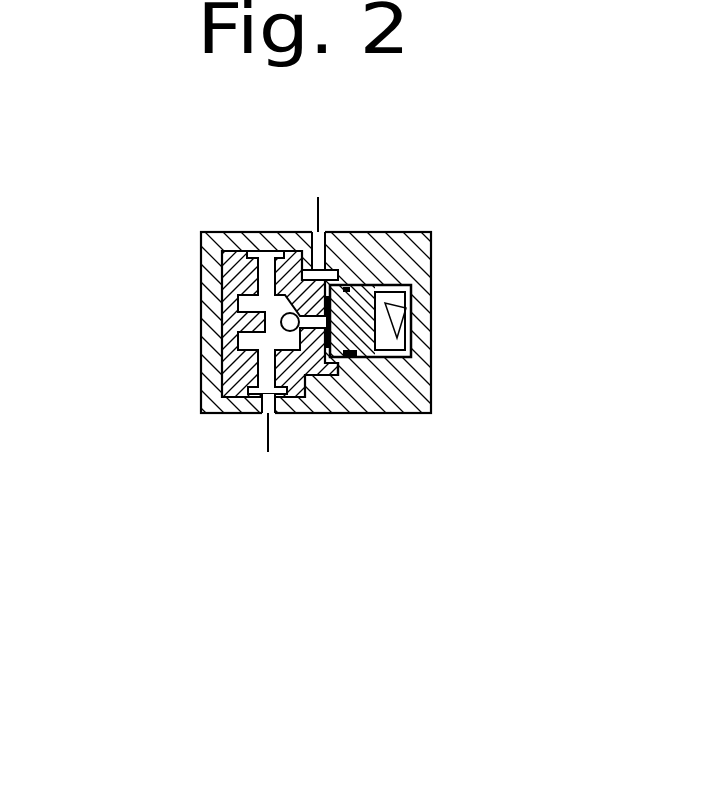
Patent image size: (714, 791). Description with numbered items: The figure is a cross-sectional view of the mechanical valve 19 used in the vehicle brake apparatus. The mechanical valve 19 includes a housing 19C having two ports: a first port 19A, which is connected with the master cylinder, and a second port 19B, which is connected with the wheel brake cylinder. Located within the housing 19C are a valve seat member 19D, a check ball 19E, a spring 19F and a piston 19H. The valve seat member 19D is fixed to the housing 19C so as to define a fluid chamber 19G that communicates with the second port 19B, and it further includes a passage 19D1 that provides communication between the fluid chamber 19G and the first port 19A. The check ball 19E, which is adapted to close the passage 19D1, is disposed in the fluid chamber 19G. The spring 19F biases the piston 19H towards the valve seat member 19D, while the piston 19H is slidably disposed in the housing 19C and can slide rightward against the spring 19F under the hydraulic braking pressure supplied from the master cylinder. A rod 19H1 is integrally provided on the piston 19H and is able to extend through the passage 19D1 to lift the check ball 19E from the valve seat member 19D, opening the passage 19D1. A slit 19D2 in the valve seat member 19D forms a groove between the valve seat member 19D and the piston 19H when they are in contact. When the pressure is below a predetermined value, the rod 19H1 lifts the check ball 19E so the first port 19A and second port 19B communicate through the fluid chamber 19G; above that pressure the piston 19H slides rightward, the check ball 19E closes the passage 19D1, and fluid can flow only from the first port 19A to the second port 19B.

The mechanical valve 19 is at (443, 218).
The first port 19A is at (325, 232).
The second port 19B is at (263, 413).
The housing 19C is at (420, 380).
The valve seat member 19D is at (225, 372).
The passage 19D1 is at (315, 313).
The slit 19D2 is at (312, 377).
The check ball 19E is at (290, 322).
The spring 19F is at (402, 310).
The fluid chamber 19G is at (245, 340).
The piston 19H is at (357, 342).
The rod 19H1 is at (410, 336).